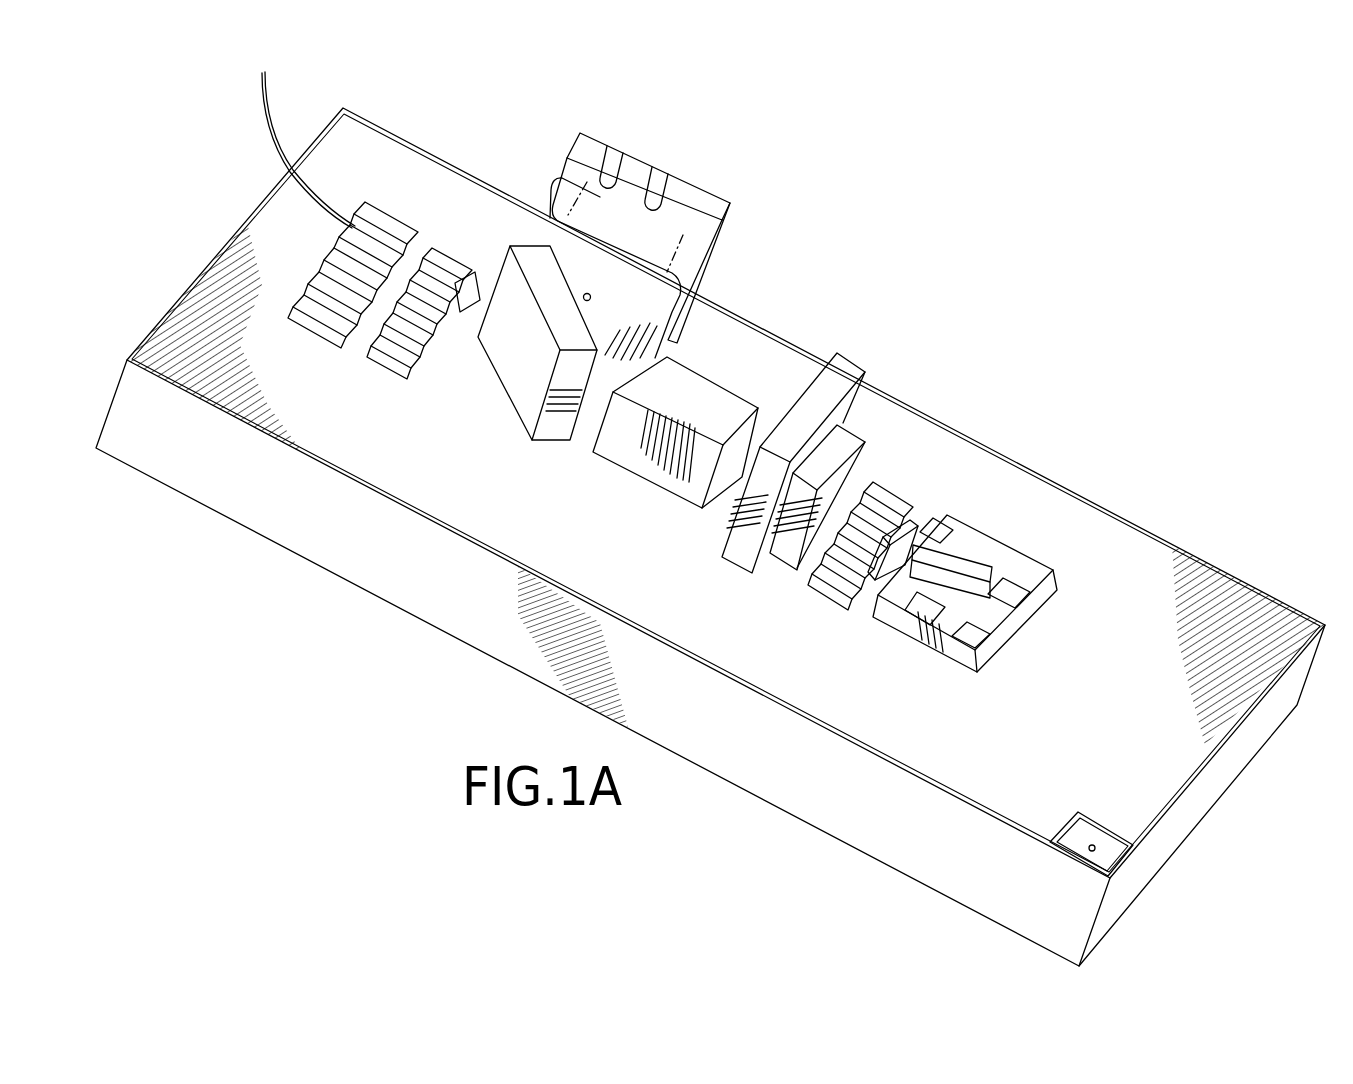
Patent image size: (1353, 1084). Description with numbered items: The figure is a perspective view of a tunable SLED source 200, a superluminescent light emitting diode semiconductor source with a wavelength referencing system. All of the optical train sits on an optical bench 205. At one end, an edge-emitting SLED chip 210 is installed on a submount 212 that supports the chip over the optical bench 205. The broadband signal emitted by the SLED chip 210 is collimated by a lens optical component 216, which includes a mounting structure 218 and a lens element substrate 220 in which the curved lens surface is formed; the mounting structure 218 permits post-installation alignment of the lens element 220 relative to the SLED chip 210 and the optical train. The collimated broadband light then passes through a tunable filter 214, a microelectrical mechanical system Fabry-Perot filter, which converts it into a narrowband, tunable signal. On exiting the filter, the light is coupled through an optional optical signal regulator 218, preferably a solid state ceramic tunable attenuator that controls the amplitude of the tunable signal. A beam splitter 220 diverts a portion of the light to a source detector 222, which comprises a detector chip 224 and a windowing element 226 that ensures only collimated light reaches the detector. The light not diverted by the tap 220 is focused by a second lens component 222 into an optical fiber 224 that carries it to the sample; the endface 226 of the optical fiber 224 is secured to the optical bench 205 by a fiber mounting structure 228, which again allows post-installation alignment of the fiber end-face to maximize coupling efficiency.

The tunable SLED source 200 is at (1098, 424).
The optical bench 205 is at (1136, 785).
The SLED chip 210 is at (955, 560).
The submount 212 is at (1055, 577).
The tunable filter 214 is at (850, 365).
The lens optical component 216 is at (891, 481).
The mounting structure 218 is at (716, 387).
The lens element substrate 220 is at (520, 246).
The second lens component 222 is at (693, 196).
The optical fiber 224 is at (262, 128).
The endface of the optical fiber 226 is at (588, 294).
The fiber mounting structure 228 is at (330, 307).